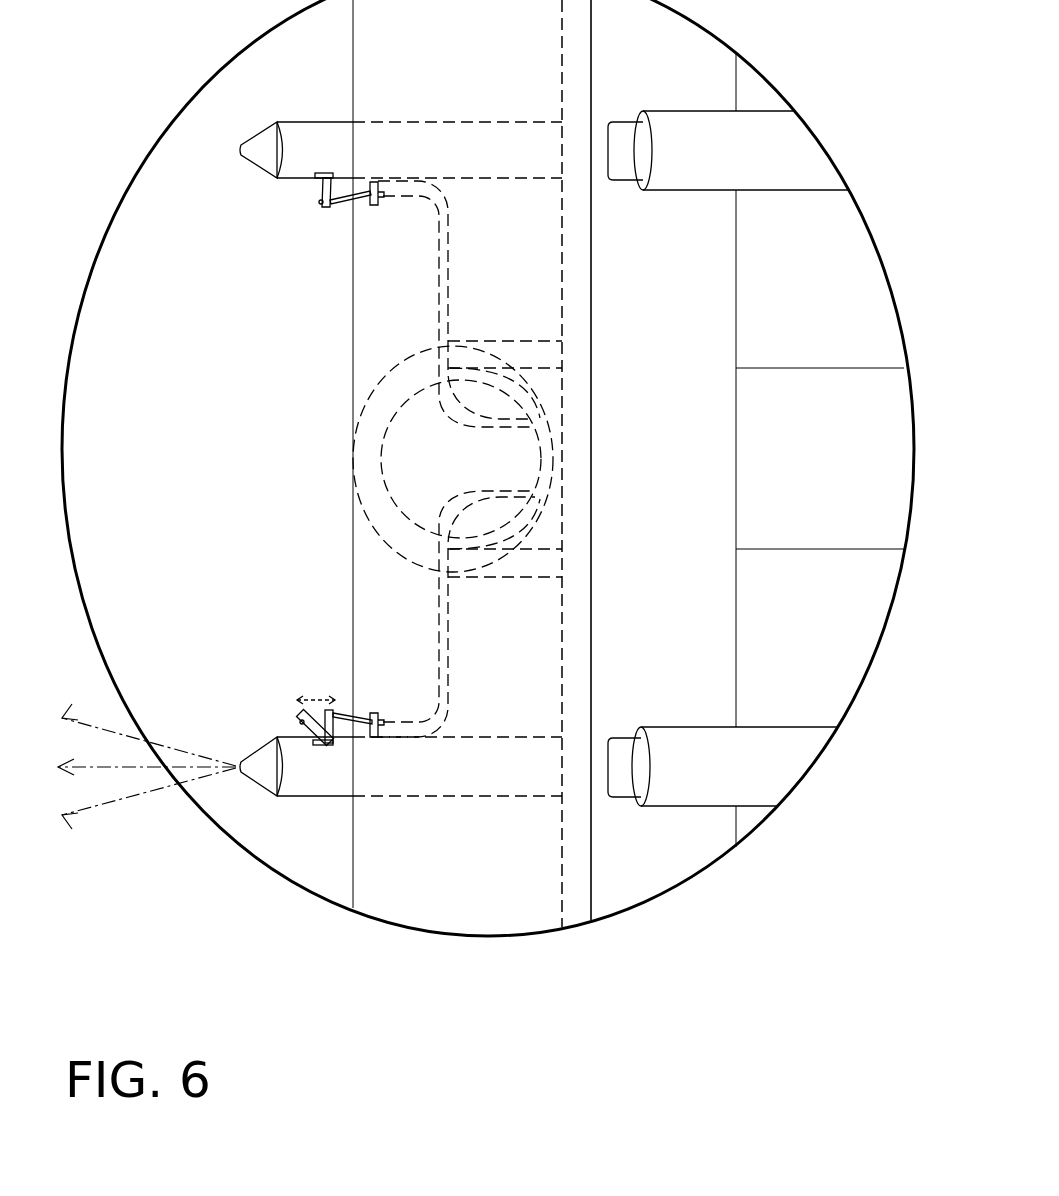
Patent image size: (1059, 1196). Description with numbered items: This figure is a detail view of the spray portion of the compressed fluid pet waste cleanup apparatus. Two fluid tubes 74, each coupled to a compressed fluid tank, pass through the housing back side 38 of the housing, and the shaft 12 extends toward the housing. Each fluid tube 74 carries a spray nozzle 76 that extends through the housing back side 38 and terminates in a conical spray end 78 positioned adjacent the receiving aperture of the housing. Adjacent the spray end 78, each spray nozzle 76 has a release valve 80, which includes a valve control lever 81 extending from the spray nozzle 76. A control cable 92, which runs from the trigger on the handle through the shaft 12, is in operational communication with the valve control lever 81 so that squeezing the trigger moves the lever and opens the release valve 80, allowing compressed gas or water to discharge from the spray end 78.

The shaft 12 is at (845, 410).
The housing back side 38 is at (683, 310).
The fluid tube 74 is at (793, 162).
The spray nozzle 76 is at (320, 145).
The spray end 78 is at (265, 772).
The release valve 80 is at (325, 722).
The valve control lever 81 is at (322, 190).
The control cable 92 is at (330, 716).